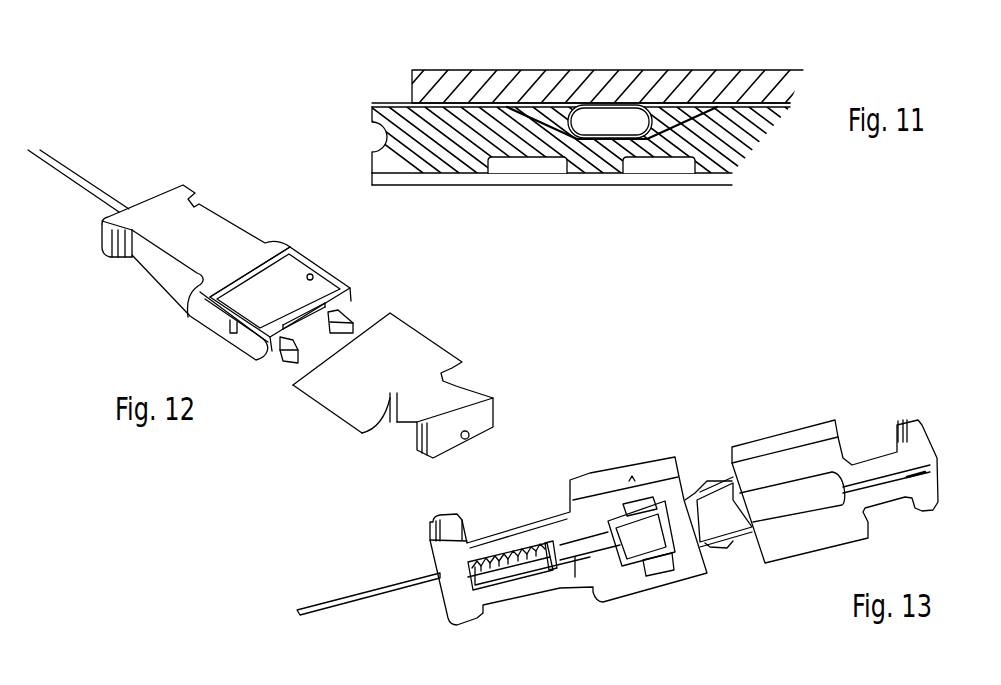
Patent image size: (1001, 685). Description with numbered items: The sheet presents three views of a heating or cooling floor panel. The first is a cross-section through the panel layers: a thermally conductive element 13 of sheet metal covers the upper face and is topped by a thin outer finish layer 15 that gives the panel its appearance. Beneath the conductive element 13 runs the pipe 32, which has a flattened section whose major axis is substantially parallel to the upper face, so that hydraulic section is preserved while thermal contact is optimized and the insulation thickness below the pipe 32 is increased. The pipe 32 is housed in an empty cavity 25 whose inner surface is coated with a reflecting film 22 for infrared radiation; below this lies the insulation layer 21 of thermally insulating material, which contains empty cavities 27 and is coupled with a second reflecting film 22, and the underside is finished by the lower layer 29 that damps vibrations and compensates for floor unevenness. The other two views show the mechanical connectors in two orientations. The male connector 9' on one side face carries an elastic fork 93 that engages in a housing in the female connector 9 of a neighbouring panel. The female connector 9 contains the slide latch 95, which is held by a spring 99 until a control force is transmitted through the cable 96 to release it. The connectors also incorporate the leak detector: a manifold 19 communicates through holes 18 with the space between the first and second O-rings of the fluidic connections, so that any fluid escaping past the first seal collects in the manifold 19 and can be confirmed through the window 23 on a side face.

In FIG. 12, the female connector 9 is at (199, 272).
In FIG. 13, the female connector 9 is at (581, 537).
In FIG. 12, the male connector 9' is at (393, 381).
In FIG. 13, the male connector 9' is at (835, 468).
In FIG. 11, the thermally conductive element 13 is at (771, 98).
In FIG. 11, the outer finish layer 15 is at (718, 71).
In FIG. 12, the holes 18 is at (318, 270).
In FIG. 12, the manifold 19 is at (293, 288).
In FIG. 11, the insulation layer 21 is at (743, 131).
In FIG. 11, the reflecting film 22 is at (694, 118).
In FIG. 12, the window 23 is at (330, 306).
In FIG. 11, the empty cavity 25 is at (550, 112).
In FIG. 11, the cavities 27 is at (542, 167).
In FIG. 11, the lower layer 29 is at (722, 174).
In FIG. 11, the pipe 32 is at (620, 110).
In FIG. 12, the elastic fork 93 is at (283, 362).
In FIG. 13, the elastic fork 93 is at (738, 547).
In FIG. 13, the slide latch 95 is at (670, 552).
In FIG. 12, the cable 96 is at (103, 200).
In FIG. 13, the cable 96 is at (397, 585).
In FIG. 13, the spring 99 is at (547, 563).